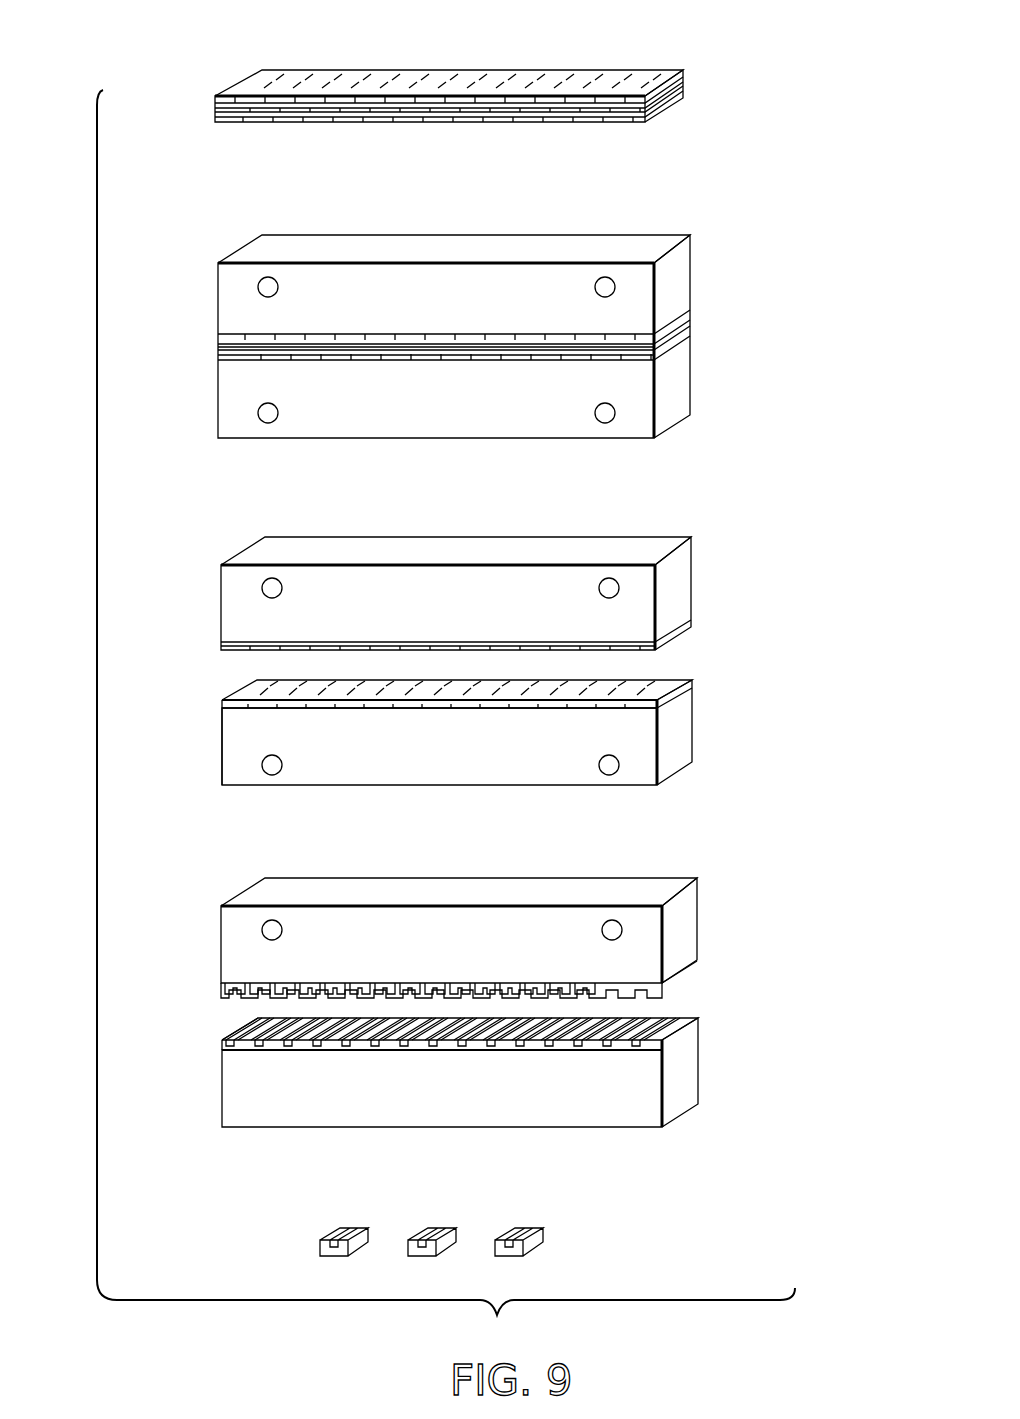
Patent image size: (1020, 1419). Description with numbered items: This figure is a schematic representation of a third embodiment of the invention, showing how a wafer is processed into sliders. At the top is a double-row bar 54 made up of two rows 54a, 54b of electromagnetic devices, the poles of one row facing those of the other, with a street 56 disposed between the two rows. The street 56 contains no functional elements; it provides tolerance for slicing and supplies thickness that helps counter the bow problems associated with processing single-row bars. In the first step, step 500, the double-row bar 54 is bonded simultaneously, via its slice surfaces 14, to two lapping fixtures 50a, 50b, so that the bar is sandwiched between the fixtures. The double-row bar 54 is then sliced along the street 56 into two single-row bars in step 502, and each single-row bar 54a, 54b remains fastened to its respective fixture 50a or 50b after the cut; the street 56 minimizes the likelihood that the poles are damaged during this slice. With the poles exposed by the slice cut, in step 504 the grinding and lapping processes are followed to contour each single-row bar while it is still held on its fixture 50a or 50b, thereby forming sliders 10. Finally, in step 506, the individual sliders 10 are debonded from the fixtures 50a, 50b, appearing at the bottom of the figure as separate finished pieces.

The slider 10 is at (398, 1206).
The slice surface 14 is at (436, 70).
The double-row bar 54 is at (449, 66).
The first row / single-row bar 54a is at (215, 100).
The second row / single-row bar 54b is at (215, 118).
The street 56 is at (215, 108).
The first lapping fixture 50a is at (680, 270).
The second lapping fixture 50b is at (684, 372).
The bonding step 500 is at (433, 135).
The slicing step 502 is at (441, 452).
The grinding and lapping step 504 is at (443, 800).
The debonding step 506 is at (445, 1140).